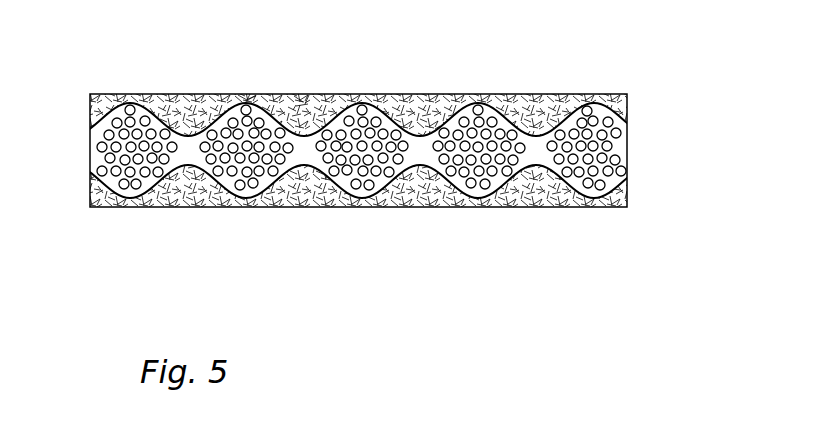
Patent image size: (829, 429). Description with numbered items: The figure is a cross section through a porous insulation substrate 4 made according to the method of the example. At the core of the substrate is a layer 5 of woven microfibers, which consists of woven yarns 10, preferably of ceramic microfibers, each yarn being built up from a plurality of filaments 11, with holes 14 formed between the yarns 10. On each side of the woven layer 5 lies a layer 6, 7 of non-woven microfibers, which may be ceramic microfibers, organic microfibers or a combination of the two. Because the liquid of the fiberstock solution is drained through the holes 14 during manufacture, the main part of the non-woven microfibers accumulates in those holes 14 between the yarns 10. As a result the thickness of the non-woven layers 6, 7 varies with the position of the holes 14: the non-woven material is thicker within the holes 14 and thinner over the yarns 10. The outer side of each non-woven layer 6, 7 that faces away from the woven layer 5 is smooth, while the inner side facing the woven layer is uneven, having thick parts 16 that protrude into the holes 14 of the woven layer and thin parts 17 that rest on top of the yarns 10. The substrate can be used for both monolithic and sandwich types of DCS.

The porous insulation substrate 4 is at (652, 138).
The layer of woven microfibers 5 is at (100, 158).
The layer of non-woven microfibers 6 is at (188, 95).
The layer of non-woven microfibers 7 is at (183, 204).
The woven yarns 10 is at (492, 137).
The filaments 11 is at (365, 192).
The holes 14 is at (185, 162).
The thick parts 16 is at (304, 97).
The thin parts 17 is at (248, 97).